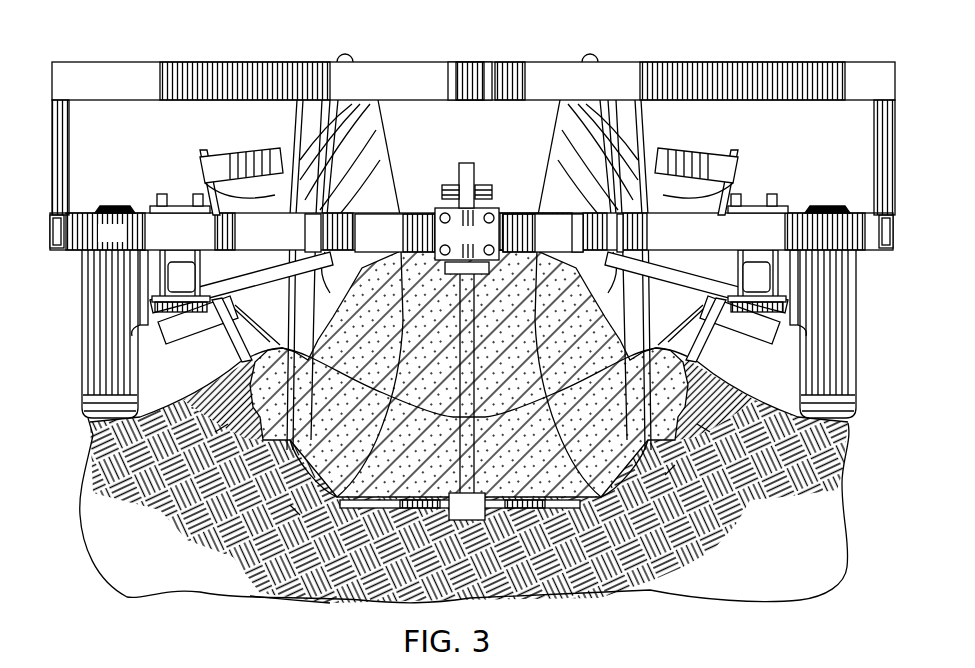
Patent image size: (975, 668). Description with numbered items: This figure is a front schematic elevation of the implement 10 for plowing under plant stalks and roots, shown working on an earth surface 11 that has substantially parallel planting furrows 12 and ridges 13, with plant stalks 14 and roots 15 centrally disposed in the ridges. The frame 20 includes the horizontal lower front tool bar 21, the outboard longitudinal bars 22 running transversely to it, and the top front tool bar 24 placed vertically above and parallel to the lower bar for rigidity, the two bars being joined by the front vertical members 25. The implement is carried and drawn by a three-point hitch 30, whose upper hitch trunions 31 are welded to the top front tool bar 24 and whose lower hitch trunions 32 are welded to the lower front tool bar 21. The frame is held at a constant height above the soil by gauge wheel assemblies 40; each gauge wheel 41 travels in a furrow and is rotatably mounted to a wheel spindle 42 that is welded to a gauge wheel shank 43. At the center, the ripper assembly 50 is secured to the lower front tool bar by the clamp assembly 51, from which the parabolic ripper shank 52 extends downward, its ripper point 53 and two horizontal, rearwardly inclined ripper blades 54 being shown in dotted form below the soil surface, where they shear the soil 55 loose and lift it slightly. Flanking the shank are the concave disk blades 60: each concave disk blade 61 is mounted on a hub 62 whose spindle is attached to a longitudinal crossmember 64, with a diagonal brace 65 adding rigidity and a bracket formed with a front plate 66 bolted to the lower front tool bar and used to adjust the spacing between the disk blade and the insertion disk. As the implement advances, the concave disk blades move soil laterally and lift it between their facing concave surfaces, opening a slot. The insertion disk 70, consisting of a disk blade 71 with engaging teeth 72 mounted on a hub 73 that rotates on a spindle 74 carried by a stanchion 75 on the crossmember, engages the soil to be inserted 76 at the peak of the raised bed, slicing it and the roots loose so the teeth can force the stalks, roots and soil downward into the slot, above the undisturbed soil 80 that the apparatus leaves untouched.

The implement for plowing under plant stalks and roots 10 is at (127, 33).
The earth surface 11 is at (190, 405).
The planting furrows 12 is at (90, 422).
The ridges 13 is at (240, 385).
The plant stalks 14 is at (292, 137).
The roots 15 is at (700, 440).
The frame 20 is at (473, 121).
The lower front tool bar 21 is at (122, 242).
The outboard longitudinal bars 22 is at (52, 240).
The top front tool bar 24 is at (155, 78).
The front vertical members 25 is at (70, 170).
The three-point hitch 30 is at (497, 72).
The upper hitch trunions 31 is at (489, 62).
The lower hitch trunions 32 is at (340, 238).
The gauge wheel assemblies 40 is at (471, 334).
The gauge wheels 41 is at (84, 350).
The wheel spindle 42 is at (140, 330).
The gauge wheel shank 43 is at (150, 348).
The ripper assembly 50 is at (478, 182).
The clamp assembly 51 is at (478, 243).
The parabolic ripper shank 52 is at (474, 300).
The ripper point 53 is at (460, 522).
The ripper blades 54 is at (395, 512).
The soil 55 is at (430, 445).
The concave disk blades 60 is at (393, 128).
The concave disk blade 61 is at (360, 143).
The hubs 62 is at (335, 300).
The longitudinal crossmember 64 is at (182, 262).
The brace 65 is at (230, 300).
The front plate 66 is at (178, 195).
The insertion disk 70 is at (200, 142).
The disk blade 71 is at (203, 165).
The engaging teeth 72 is at (243, 252).
The hub 73 is at (222, 345).
The spindle 74 is at (195, 340).
The stanchion 75 is at (742, 276).
The soil to be inserted 76 is at (295, 510).
The undisturbed soil 80 is at (295, 585).